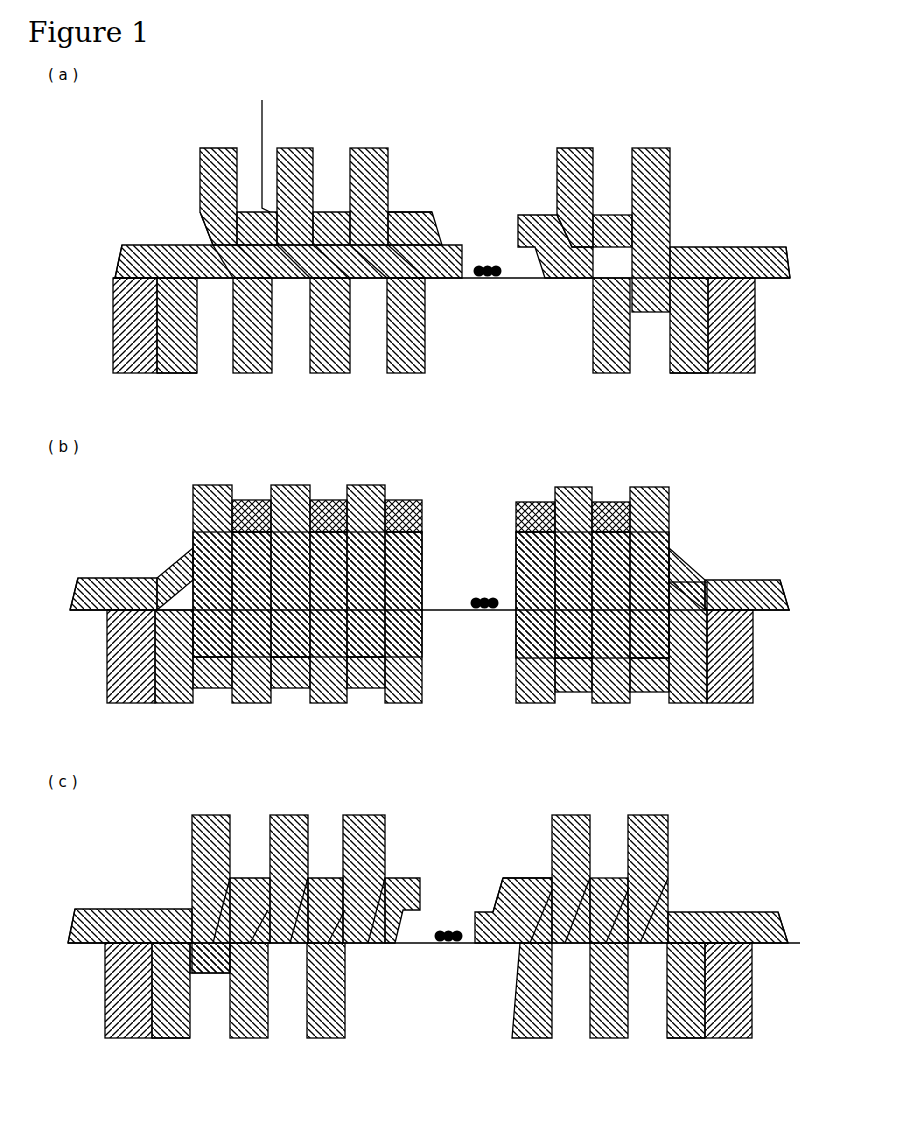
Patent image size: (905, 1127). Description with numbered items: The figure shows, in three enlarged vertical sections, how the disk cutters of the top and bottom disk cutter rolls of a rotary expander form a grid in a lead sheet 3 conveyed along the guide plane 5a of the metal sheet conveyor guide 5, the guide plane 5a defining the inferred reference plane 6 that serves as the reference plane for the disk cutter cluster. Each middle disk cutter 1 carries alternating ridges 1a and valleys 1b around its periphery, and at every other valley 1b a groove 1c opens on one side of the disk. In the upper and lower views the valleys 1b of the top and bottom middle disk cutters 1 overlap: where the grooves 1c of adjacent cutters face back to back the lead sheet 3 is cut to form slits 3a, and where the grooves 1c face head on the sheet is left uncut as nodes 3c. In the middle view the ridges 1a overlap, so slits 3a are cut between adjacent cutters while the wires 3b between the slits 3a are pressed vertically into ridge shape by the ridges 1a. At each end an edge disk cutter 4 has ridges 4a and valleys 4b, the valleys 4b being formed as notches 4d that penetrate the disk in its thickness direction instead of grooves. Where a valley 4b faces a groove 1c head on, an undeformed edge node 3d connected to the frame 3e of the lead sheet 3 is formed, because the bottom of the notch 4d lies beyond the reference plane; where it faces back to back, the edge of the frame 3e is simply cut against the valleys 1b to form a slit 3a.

The middle disk cutter 1 is at (217, 148).
The ridge 1a is at (250, 500).
The valley 1b is at (220, 282).
The groove 1c is at (682, 832).
The lead sheet 3 is at (740, 247).
The slit 3a is at (392, 212).
The wire 3b is at (328, 500).
The node 3c is at (338, 212).
The edge node 3d is at (190, 245).
The frame 3e is at (118, 250).
The edge disk cutter 4 is at (178, 375).
The ridge 4a is at (185, 548).
The valley 4b is at (197, 305).
The notch 4d is at (148, 245).
The metal sheet conveyor guide 5 is at (118, 345).
The guide plane 5a is at (113, 290).
The inferred reference plane 6 is at (522, 280).